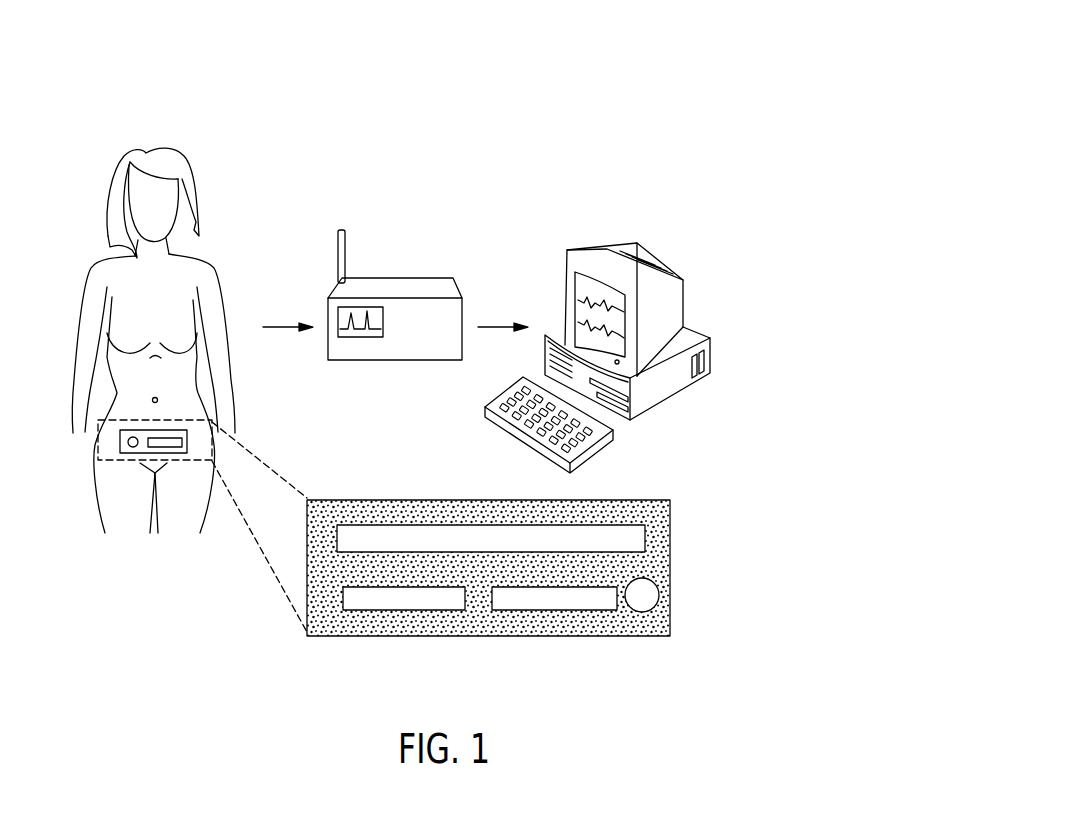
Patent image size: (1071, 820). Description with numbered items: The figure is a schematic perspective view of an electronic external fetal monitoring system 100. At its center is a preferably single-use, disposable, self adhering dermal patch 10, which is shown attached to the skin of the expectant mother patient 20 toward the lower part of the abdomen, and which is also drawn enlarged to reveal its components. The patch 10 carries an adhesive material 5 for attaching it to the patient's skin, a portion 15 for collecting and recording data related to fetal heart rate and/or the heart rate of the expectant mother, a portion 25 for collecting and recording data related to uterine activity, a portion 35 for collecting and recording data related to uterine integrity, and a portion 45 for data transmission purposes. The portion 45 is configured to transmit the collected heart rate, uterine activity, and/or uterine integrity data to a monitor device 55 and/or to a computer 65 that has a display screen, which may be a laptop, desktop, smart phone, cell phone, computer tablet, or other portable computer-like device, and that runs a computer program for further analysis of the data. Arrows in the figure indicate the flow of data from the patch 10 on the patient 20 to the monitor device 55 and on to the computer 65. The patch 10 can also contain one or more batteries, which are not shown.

The electronic external fetal monitoring system 100 is at (646, 66).
The expectant mother patient 20 is at (181, 150).
The self adhering dermal patch 10 is at (168, 455).
The adhesive material 5 is at (657, 520).
The portion for collecting and recording heart rate data 15 is at (400, 532).
The portion for collecting and recording uterine activity data 25 is at (400, 598).
The portion for collecting and recording uterine integrity data 35 is at (550, 598).
The portion for data transmission 45 is at (648, 597).
The monitor device 55 is at (402, 277).
The computer 65 is at (648, 256).